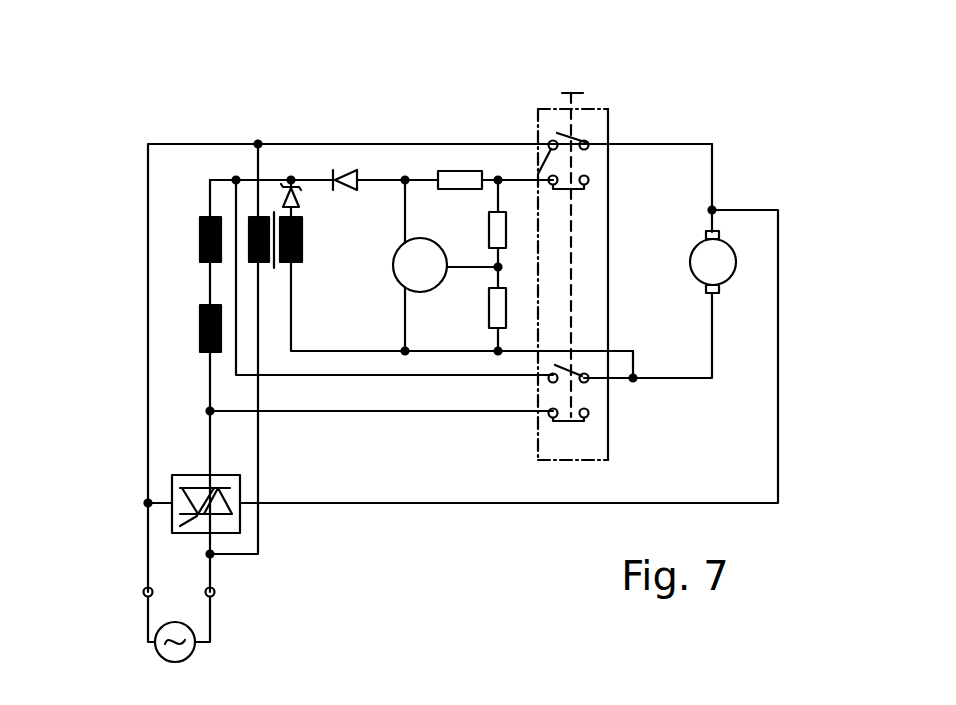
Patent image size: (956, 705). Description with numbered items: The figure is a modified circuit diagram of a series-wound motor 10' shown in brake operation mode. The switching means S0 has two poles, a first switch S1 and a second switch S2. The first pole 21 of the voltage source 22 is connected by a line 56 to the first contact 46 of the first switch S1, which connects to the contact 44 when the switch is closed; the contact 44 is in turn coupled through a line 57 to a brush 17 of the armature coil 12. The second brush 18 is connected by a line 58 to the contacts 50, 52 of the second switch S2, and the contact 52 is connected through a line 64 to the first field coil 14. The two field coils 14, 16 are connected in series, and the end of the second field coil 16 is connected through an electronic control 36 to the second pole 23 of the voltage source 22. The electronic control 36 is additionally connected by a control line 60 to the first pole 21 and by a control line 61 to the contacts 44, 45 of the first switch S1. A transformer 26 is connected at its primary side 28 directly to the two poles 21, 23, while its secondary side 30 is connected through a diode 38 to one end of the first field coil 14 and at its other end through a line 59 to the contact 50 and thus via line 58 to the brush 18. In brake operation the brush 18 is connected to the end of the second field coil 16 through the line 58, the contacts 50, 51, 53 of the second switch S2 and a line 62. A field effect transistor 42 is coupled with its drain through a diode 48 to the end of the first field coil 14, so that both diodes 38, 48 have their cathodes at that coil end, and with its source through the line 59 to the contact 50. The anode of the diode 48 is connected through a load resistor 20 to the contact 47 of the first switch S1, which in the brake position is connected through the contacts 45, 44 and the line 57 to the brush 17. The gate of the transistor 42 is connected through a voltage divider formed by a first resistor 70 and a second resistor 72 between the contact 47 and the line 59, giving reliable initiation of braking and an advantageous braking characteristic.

The series-wound motor 10' is at (501, 299).
The armature coil 12 is at (720, 260).
The first field coil 14 is at (200, 240).
The second field coil 16 is at (200, 333).
The brush 17 is at (718, 233).
The second brush 18 is at (720, 290).
The load resistor 20 is at (456, 171).
The first pole 21 is at (143, 596).
The voltage source 22 is at (192, 648).
The second pole 23 is at (214, 595).
The transformer 26 is at (268, 196).
The primary side 28 is at (248, 212).
The secondary side 30 is at (300, 262).
The electronic control 36 is at (238, 525).
The diode 38 is at (300, 197).
The field effect transistor 42 is at (400, 270).
The contact 44 is at (610, 108).
The contact 45 is at (586, 184).
The first contact 46 is at (550, 140).
The contact 47 is at (537, 145).
The diode 48 is at (342, 170).
The contact 50 is at (588, 376).
The contact 51 is at (587, 417).
The contact 52 is at (551, 381).
The contact 53 is at (553, 422).
The line 56 is at (190, 143).
The line 57 is at (712, 172).
The line 58 is at (714, 325).
The line 59 is at (445, 352).
The control line 60 is at (168, 503).
The control line 61 is at (778, 420).
The line 62 is at (298, 412).
The line 64 is at (318, 376).
The first resistor 70 is at (489, 230).
The second resistor 72 is at (489, 312).
The switching means S0 is at (583, 288).
The first switch S1 is at (588, 162).
The second switch S2 is at (588, 382).